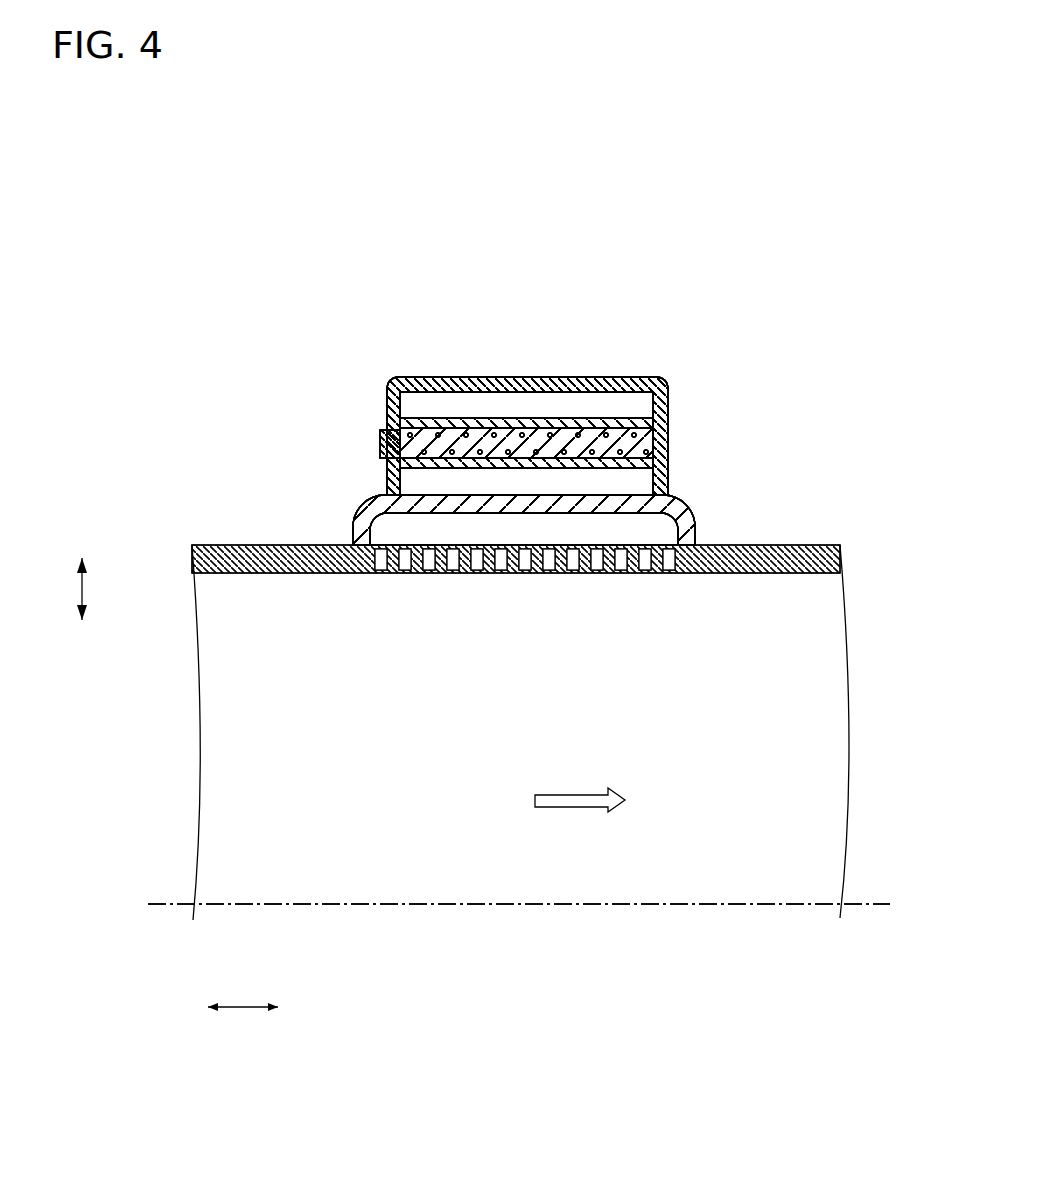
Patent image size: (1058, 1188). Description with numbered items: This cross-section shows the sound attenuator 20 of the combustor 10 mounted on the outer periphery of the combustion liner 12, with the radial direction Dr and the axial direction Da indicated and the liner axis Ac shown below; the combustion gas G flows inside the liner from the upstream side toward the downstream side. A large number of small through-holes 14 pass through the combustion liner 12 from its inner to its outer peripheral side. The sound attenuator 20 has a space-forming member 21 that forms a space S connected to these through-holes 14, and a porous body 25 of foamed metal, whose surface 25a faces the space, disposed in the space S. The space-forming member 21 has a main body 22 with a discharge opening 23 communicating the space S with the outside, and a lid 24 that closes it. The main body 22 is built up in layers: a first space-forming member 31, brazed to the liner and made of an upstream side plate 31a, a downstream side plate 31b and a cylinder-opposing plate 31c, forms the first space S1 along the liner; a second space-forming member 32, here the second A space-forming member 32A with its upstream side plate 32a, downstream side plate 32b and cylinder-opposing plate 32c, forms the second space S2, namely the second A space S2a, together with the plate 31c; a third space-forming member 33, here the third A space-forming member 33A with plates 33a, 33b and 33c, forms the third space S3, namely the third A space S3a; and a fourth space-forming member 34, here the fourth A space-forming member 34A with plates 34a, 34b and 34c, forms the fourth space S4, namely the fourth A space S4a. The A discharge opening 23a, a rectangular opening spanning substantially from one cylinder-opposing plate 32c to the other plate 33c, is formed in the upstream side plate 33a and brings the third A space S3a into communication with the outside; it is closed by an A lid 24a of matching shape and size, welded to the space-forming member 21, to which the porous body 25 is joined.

The gas sensor system 10 is at (863, 262).
The combustion liner 12 is at (828, 546).
The through-hole 14 is at (489, 553).
The sound attenuator 20 is at (683, 342).
The space-forming member 21 is at (400, 373).
The main body 22 is at (475, 366).
The discharge opening 23 is at (282, 409).
The A discharge opening 23a is at (380, 434).
The lid 24 is at (281, 431).
The A lid 24a is at (380, 442).
The porous body 25 is at (526, 317).
The detection surface 25a is at (537, 440).
The first space-forming member 31 is at (690, 518).
The upstream side plate 31a is at (355, 533).
The downstream side plate 31b is at (700, 540).
The cylinder-opposing plate 31c is at (462, 507).
The second space-forming member 32 is at (657, 450).
The second A space-forming member 32A is at (660, 470).
The upstream side plate 32a is at (388, 486).
The downstream side plate 32b is at (658, 484).
The cylinder-opposing plate 32c is at (578, 463).
The third space-forming member 33 is at (652, 423).
The third A space-forming member 33A is at (660, 432).
The upstream side plate 33a is at (380, 448).
The downstream side plate 33b is at (658, 449).
The cylinder-opposing plate 33c is at (602, 418).
The fourth space-forming member 34 is at (604, 407).
The fourth A space-forming member 34A is at (665, 398).
The upstream side plate 34a is at (388, 392).
The downstream side plate 34b is at (660, 404).
The cylinder-opposing plate 34c is at (438, 378).
The space S is at (526, 327).
The first space S1 is at (412, 533).
The second space S2 is at (526, 591).
The second A space S2a is at (543, 483).
The third space S3 is at (526, 339).
The third A space S3a is at (563, 443).
The fourth space S4 is at (526, 327).
The fourth A space S4a is at (483, 403).
The exhaust gas flow G is at (578, 792).
The radial direction Dr is at (63, 589).
The axial direction Da is at (257, 994).
The pipe axis Ac is at (178, 903).